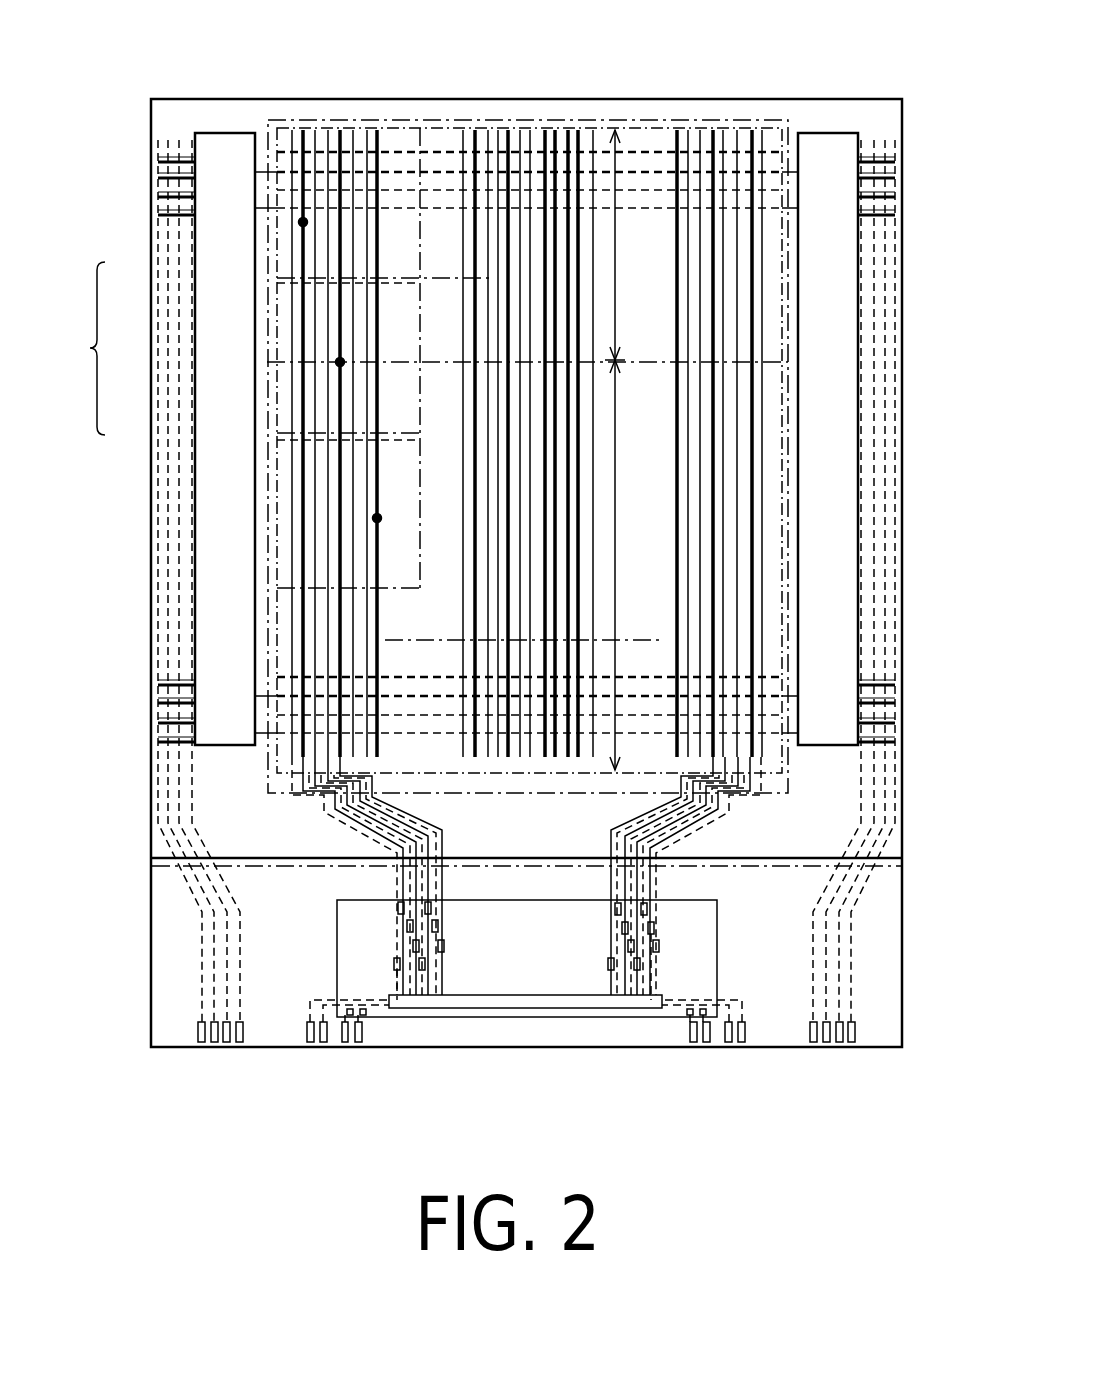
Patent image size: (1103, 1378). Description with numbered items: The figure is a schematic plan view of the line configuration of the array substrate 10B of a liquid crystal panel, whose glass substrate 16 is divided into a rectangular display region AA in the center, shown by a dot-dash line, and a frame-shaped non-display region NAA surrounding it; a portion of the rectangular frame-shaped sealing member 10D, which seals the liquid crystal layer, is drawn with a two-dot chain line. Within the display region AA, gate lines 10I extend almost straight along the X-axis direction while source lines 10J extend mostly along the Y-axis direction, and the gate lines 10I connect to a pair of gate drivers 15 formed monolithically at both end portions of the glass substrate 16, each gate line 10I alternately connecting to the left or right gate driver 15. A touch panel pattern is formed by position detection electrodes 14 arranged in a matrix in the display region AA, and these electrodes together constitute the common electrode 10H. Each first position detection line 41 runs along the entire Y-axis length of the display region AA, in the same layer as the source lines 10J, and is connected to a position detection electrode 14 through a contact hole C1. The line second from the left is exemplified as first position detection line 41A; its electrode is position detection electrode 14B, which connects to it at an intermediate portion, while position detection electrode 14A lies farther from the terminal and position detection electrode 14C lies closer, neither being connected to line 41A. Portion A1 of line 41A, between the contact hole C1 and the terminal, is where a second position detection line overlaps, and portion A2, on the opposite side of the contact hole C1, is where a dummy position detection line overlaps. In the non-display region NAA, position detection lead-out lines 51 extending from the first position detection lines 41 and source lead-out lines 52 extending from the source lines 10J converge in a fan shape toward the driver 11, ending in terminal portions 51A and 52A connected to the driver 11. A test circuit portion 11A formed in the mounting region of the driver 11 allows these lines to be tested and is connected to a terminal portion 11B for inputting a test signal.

The array substrate 10B is at (851, 110).
The gate driver 15 is at (223, 160).
The display region AA is at (778, 352).
The sealing member 10D is at (822, 776).
The non-display region NAA is at (883, 923).
The position detection electrode 14 is at (465, 133).
The common electrode 10H is at (77, 348).
The position detection electrode 14A is at (402, 133).
The position detection electrode 14B is at (418, 300).
The position detection electrode 14C is at (412, 562).
The contact hole C1 is at (377, 518).
The first position detection line 41 is at (373, 573).
The source line 10J is at (315, 638).
The gate line 10I is at (277, 720).
The portion A1 is at (630, 565).
The portion A2 is at (628, 245).
The glass substrate 16 is at (175, 976).
The first position detection line 41A is at (340, 753).
The source lead-out line 52 is at (297, 800).
The position detection lead-out line 51 is at (318, 797).
The driver 11 is at (473, 960).
The test circuit portion 11A is at (533, 1002).
The terminal portion 11B is at (312, 1044).
The terminal portion 51A is at (398, 908).
The terminal portion 52A is at (394, 964).